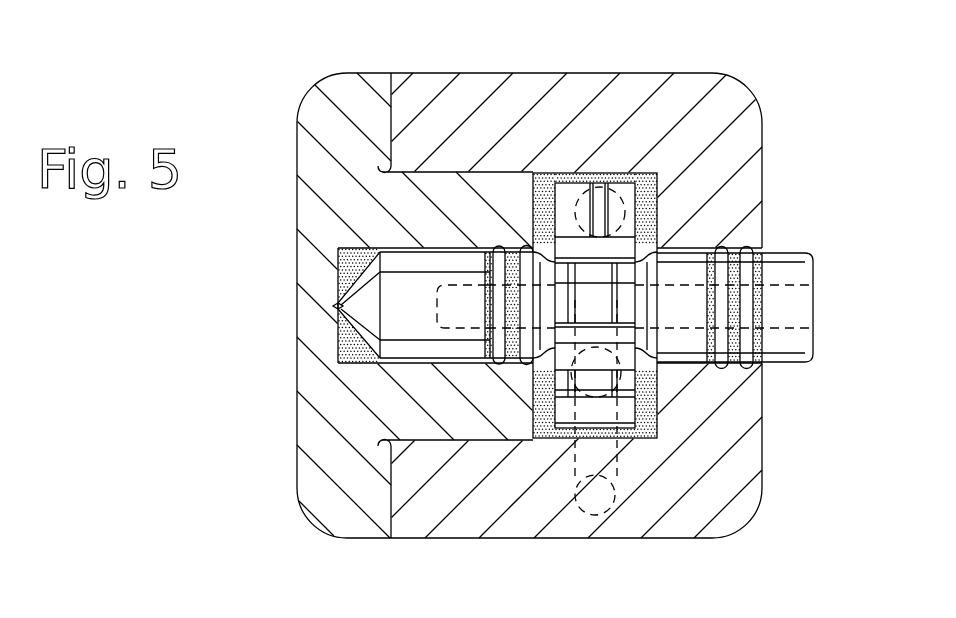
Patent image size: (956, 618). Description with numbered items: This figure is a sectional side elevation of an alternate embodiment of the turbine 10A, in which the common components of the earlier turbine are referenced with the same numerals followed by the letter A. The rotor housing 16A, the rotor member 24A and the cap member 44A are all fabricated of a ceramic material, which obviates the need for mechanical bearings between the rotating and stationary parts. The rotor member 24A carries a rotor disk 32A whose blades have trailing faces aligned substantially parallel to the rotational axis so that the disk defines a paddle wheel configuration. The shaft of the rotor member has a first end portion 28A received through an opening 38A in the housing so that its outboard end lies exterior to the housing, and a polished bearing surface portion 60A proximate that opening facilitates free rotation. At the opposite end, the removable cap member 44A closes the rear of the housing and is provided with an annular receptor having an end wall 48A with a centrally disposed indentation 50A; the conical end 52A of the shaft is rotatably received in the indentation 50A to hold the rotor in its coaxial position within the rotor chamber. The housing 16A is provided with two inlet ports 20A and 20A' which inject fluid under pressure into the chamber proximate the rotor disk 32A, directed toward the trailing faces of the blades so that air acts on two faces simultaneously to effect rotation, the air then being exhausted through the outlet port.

The turbine 10A is at (185, 308).
The rotor housing 16A is at (412, 541).
The cap member 44A is at (303, 499).
The conical end 52A is at (343, 240).
The indentation 50A is at (336, 310).
The end wall 48A is at (352, 364).
The rotor member 24A is at (410, 345).
The polished bearing surface portion 60A is at (513, 255).
The first end portion of the shaft portion 28A is at (783, 252).
The opening 38A is at (760, 363).
The rotor disk 32A is at (565, 440).
The inlet port 20A is at (604, 453).
The inlet port 20A' is at (632, 134).